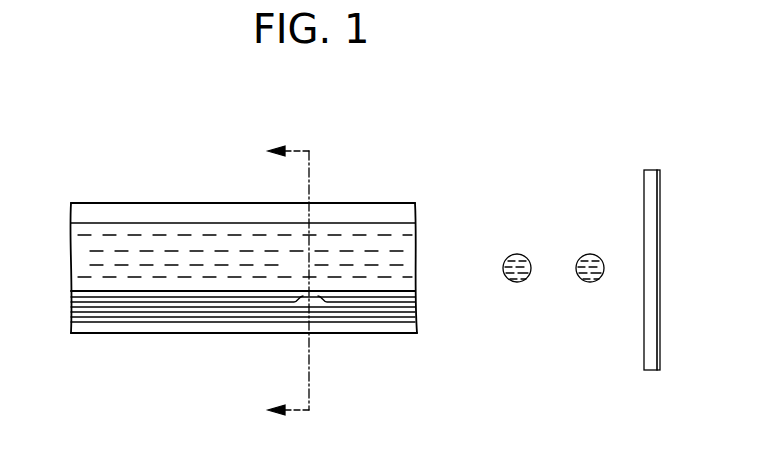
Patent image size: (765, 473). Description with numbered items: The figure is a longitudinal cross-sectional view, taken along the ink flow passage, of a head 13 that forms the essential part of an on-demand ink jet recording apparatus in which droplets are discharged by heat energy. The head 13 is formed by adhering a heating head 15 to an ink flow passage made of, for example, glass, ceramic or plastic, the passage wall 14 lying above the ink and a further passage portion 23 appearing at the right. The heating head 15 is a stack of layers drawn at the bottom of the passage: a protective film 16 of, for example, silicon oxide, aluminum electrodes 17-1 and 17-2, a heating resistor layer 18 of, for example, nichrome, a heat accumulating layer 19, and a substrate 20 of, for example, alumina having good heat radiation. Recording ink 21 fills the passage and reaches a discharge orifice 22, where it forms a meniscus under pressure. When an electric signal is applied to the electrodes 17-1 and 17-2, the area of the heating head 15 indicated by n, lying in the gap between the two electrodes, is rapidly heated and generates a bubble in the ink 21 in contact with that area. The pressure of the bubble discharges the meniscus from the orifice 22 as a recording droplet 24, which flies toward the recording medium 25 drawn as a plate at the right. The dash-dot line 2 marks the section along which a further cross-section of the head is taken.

The section line 2— 2 is at (288, 281).
The head 13 is at (160, 204).
The intermediate layer 14 is at (236, 223).
The heating head 15 is at (219, 348).
The protective film 16 is at (134, 295).
The aluminum electrode 17-1 is at (182, 302).
The aluminum electrode 17-2 is at (395, 305).
The heating resistor layer 18 is at (228, 310).
The heat accumulating layer 19 is at (258, 317).
The substrate 20 is at (348, 333).
The recording ink 21 is at (98, 232).
The discharge orifice 22 is at (423, 287).
The side region 23 is at (415, 264).
The recording droplet 24 is at (603, 236).
The recording medium 25 is at (648, 200).
The heated area n is at (327, 289).